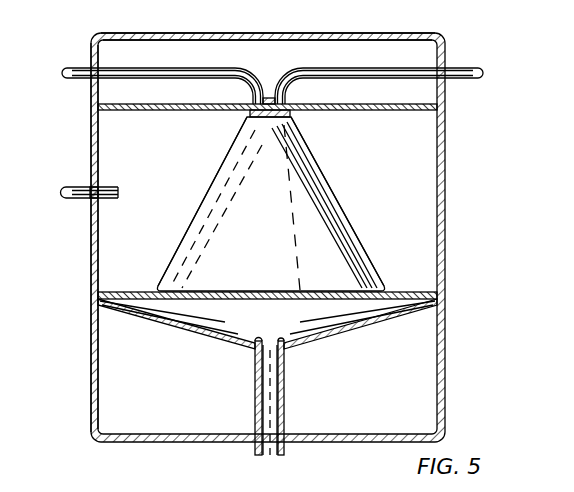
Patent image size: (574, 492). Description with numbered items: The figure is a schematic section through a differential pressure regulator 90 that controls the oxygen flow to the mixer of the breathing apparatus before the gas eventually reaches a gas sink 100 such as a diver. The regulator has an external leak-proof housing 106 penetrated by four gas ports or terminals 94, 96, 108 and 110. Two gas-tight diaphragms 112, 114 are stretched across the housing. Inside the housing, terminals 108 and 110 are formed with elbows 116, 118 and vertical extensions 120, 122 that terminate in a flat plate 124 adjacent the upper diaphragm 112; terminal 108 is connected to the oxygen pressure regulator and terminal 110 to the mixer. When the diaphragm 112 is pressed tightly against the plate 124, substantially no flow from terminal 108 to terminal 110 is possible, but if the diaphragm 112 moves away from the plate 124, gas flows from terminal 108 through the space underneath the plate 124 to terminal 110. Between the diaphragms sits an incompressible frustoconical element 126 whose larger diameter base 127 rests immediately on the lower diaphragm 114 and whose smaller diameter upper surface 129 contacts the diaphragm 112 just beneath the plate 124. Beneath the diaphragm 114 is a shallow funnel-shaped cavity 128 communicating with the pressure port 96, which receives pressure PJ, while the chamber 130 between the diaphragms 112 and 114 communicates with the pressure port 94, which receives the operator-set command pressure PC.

The differential pressure regulator 90 is at (452, 297).
The terminal 94 is at (73, 198).
The terminal 96 is at (286, 452).
The gas sink 100 is at (447, 190).
The housing 106 is at (200, 33).
The terminal 108 is at (70, 66).
The terminal 110 is at (478, 68).
The diaphragm 112 is at (378, 107).
The diaphragm 114 is at (404, 312).
The elbow 116 is at (246, 68).
The elbow 118 is at (286, 69).
The vertical extension 120 is at (250, 88).
The vertical extension 122 is at (284, 90).
The flat plate 124 is at (243, 116).
The frustoconical element 126 is at (325, 200).
The base 127 is at (340, 290).
The funnel-shaped cavity 128 is at (310, 322).
The upper surface 129 is at (290, 116).
The chamber 130 is at (118, 166).